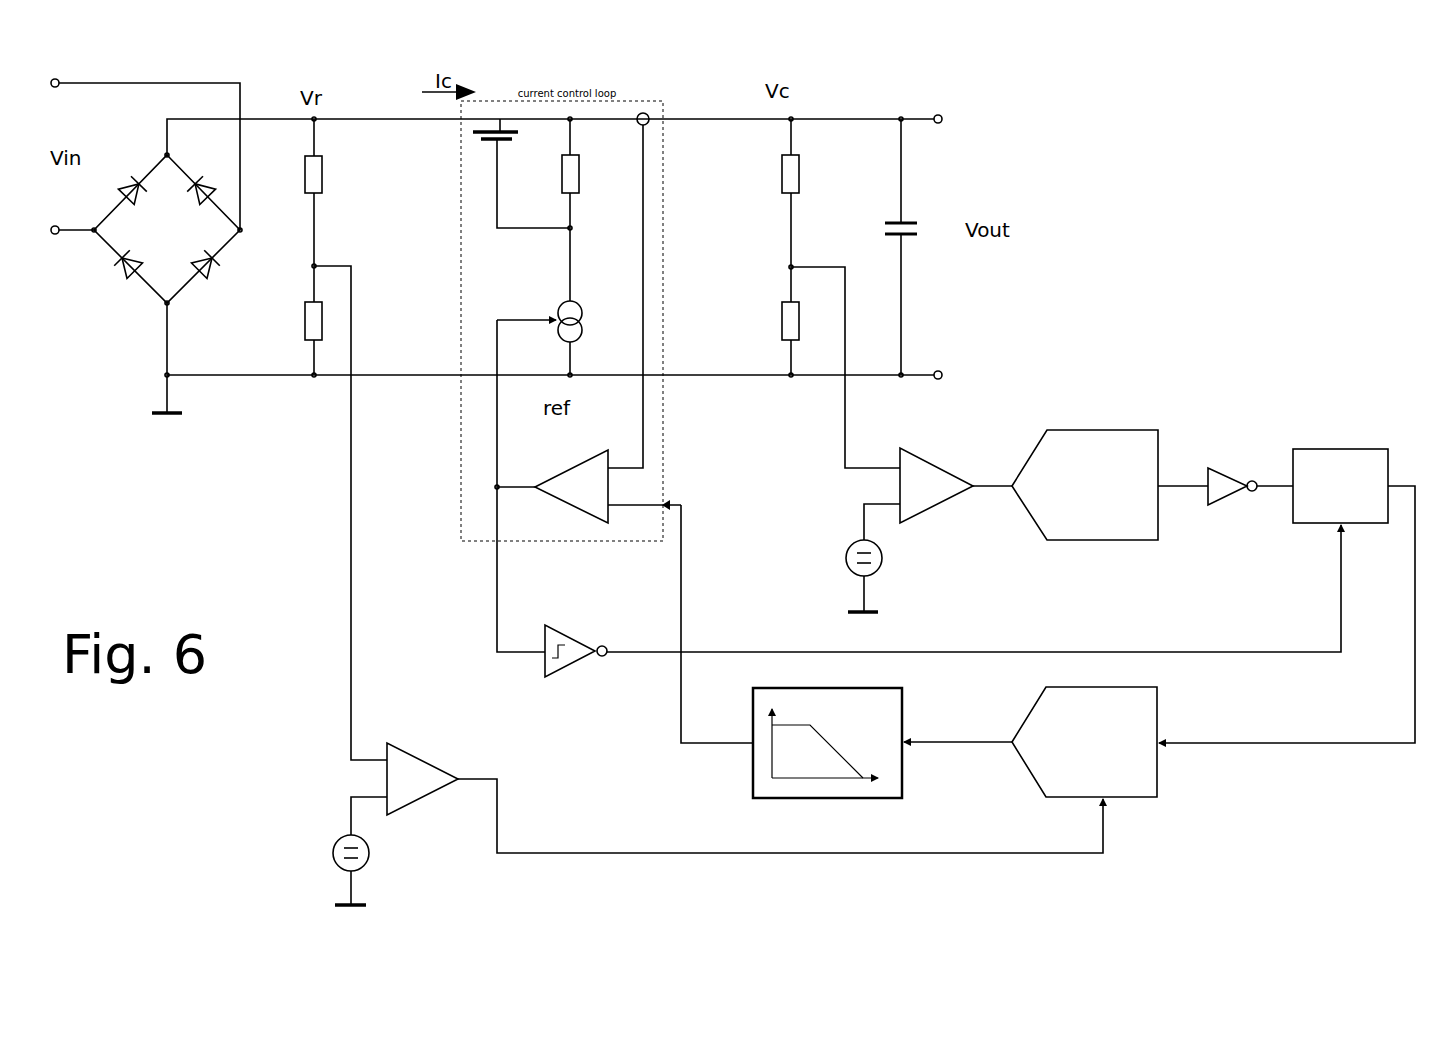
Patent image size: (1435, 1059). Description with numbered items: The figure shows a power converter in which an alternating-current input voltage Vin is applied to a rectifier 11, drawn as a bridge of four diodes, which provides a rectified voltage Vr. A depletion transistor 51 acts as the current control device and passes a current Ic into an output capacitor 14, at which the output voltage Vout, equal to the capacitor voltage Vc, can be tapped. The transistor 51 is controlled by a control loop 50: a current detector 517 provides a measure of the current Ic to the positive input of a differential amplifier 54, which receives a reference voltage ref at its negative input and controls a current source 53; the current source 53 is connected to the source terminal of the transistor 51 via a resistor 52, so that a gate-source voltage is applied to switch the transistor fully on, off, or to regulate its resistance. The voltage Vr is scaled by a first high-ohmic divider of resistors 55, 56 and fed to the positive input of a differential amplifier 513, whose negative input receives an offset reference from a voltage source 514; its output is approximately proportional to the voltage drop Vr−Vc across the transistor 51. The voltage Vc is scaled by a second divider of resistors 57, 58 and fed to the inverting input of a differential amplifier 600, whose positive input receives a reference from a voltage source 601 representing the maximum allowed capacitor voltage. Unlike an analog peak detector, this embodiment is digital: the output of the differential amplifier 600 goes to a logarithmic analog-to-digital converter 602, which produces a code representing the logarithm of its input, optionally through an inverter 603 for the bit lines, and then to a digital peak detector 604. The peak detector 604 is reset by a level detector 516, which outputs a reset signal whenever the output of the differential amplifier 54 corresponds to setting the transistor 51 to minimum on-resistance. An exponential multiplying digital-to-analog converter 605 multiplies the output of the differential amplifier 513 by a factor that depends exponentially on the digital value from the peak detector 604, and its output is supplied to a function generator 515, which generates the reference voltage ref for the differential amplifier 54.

The rectifier 11 is at (114, 294).
The output capacitor 14 is at (912, 221).
The control loop 50 is at (663, 105).
The depletion transistor 51 is at (486, 125).
The resistor 52 is at (578, 172).
The current source 53 is at (580, 303).
The differential amplifier 54 is at (583, 457).
The resistor 55 is at (323, 184).
The resistor 56 is at (306, 317).
The resistor 57 is at (799, 173).
The resistor 58 is at (779, 323).
The differential amplifier 513 is at (416, 751).
The voltage source 514 is at (365, 859).
The function generator 515 is at (865, 687).
The level detector 516 is at (562, 629).
The current detector 517 is at (643, 112).
The differential amplifier 600 is at (935, 460).
The voltage source 601 is at (843, 550).
The logarithmic analog-to-digital converter 602 is at (1072, 429).
The inverter 603 is at (1224, 472).
The digital peak detector 604 is at (1323, 445).
The exponential multiplying digital-to-analog converter 605 is at (1155, 721).